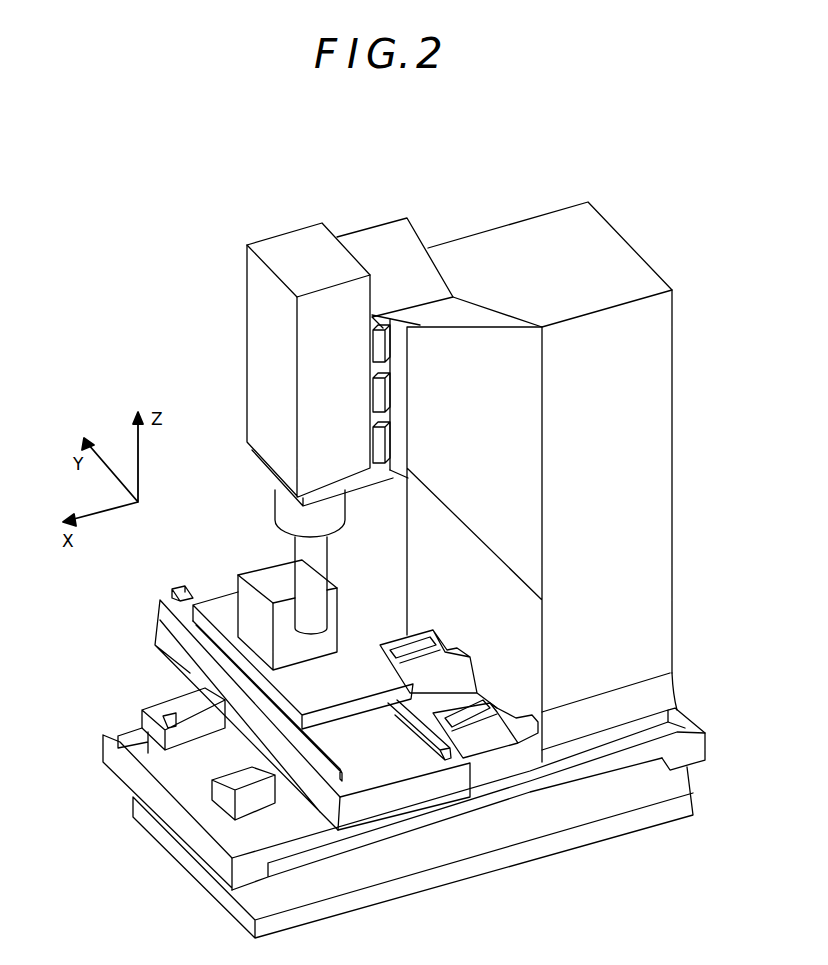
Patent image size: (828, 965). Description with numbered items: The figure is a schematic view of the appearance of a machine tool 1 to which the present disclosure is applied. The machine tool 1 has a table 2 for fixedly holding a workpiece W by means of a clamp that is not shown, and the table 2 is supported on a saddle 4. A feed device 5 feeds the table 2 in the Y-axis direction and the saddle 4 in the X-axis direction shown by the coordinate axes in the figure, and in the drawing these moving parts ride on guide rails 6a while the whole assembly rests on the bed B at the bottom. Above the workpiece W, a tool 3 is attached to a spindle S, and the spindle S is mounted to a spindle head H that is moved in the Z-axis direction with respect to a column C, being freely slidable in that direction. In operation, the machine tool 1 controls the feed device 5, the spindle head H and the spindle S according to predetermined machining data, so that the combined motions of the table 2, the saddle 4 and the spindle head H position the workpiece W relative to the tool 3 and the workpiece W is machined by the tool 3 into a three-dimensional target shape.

The machine tool 1 is at (120, 268).
The spindle head H is at (305, 250).
The column C is at (503, 245).
The spindle S is at (317, 505).
The tool 3 is at (313, 568).
The workpiece W is at (250, 607).
The table 2 is at (355, 652).
The feed device 5 is at (420, 614).
The guide rails 6a is at (415, 713).
The saddle 4 is at (373, 778).
The bed B is at (463, 837).